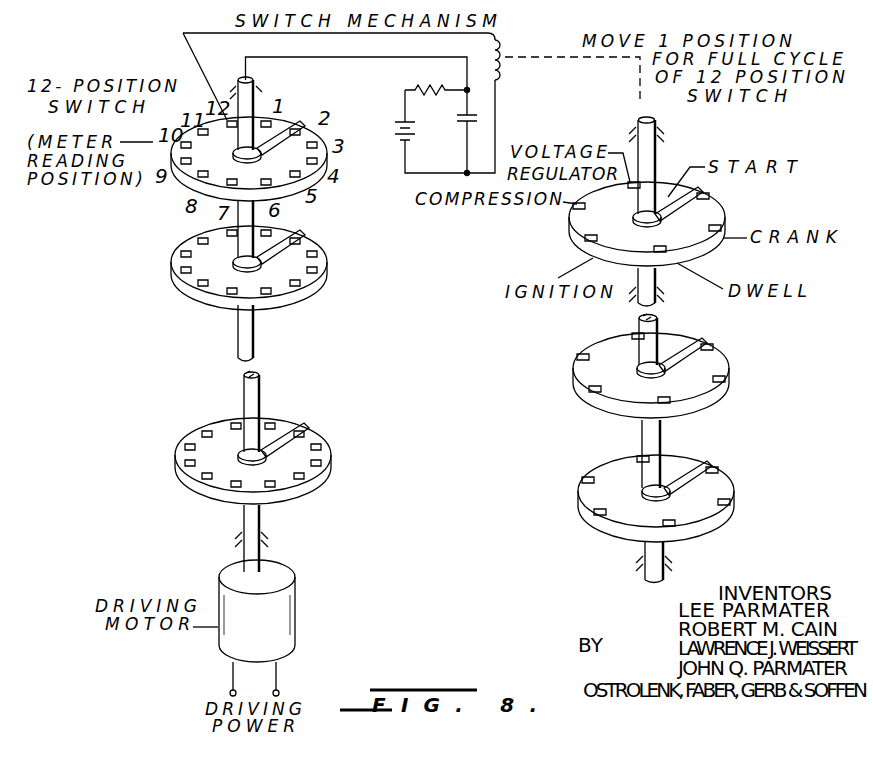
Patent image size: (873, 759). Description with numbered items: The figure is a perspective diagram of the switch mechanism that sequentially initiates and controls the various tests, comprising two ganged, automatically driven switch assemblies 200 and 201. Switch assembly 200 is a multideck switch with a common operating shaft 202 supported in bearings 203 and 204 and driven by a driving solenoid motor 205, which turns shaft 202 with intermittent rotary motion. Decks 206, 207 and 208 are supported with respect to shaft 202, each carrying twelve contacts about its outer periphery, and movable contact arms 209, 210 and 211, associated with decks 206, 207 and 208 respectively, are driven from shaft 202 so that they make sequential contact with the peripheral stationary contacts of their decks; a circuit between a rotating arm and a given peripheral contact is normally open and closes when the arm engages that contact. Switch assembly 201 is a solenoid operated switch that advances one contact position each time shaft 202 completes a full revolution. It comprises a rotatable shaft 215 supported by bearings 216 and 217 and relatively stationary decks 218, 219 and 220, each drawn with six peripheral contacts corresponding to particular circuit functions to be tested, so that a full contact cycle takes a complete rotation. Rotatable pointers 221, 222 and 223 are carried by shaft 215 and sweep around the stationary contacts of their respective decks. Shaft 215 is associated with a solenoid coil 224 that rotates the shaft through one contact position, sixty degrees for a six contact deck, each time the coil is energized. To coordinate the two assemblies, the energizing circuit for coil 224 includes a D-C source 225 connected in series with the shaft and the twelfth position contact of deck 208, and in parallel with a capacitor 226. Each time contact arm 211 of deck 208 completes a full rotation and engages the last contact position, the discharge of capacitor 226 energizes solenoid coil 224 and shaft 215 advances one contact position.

The switch assembly 200 is at (342, 412).
The switch assembly 201 is at (563, 433).
The common operating shaft 202 is at (240, 342).
The bearing 203 is at (262, 538).
The bearing 204 is at (250, 97).
The driving solenoid motor 205 is at (283, 610).
The deck 206 is at (333, 455).
The deck 207 is at (325, 274).
The deck 208 is at (323, 167).
The movable contact arm 209 is at (268, 428).
The movable contact arm 210 is at (300, 231).
The movable contact arm 211 is at (280, 123).
The rotatable shaft 215 is at (665, 445).
The bearing 216 is at (647, 563).
The bearing 217 is at (662, 293).
The deck 218 is at (578, 507).
The deck 219 is at (573, 387).
The deck 220 is at (570, 229).
The rotatable pointer 221 is at (693, 478).
The rotatable pointer 222 is at (687, 357).
The rotatable pointer 223 is at (687, 210).
The solenoid coil 224 is at (502, 47).
The D-C source 225 is at (386, 121).
The capacitor 226 is at (452, 126).